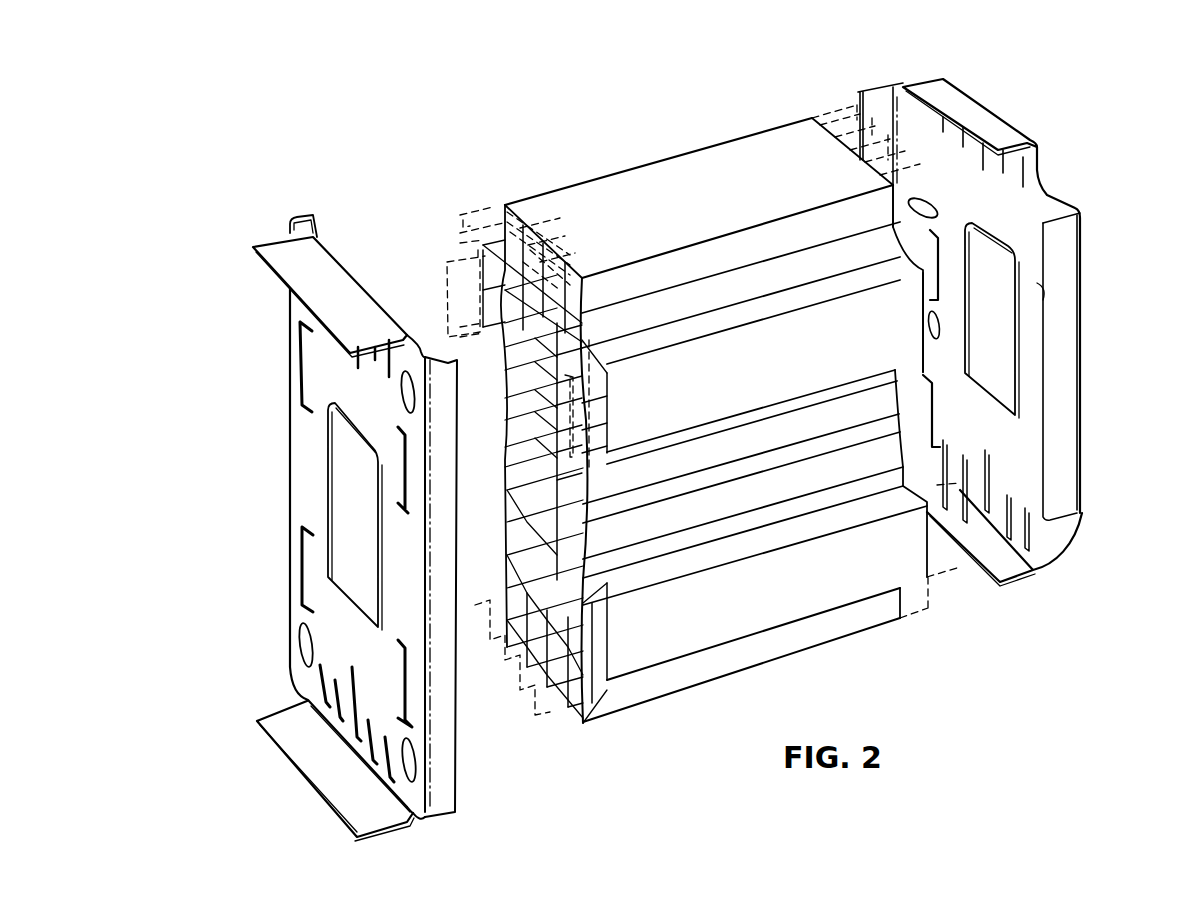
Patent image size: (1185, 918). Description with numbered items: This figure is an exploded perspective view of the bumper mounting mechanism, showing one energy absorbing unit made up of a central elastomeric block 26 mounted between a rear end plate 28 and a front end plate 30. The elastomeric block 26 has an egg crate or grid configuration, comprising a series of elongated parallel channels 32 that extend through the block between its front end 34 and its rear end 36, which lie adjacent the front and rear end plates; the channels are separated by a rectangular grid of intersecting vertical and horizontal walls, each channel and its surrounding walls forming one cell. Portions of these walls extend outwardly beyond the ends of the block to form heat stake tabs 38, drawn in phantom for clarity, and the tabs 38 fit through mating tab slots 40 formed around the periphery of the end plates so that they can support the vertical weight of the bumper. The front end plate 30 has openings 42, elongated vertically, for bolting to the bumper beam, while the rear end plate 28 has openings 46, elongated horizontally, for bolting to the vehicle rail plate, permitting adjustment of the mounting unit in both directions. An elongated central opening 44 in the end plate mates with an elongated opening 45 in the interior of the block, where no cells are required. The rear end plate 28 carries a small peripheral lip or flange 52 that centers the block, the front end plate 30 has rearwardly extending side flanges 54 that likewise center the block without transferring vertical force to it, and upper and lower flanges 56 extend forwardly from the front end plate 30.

The elastomeric block 26 is at (716, 152).
The rear end plate 28 is at (1047, 203).
The front end plate 30 is at (298, 443).
The channels 32 is at (460, 213).
The front end of the block 34 is at (460, 237).
The rear end of the block 36 is at (826, 108).
The heat stake tabs 38 is at (447, 277).
The tab slots 40 is at (300, 333).
The openings 42 is at (296, 640).
The elongated central opening 44 is at (330, 490).
The elongated opening 45 is at (575, 428).
The openings 46 is at (947, 212).
The peripheral lip or flange 52 is at (960, 105).
The side flanges 54 is at (452, 755).
The upper and lower flanges 56 is at (290, 235).